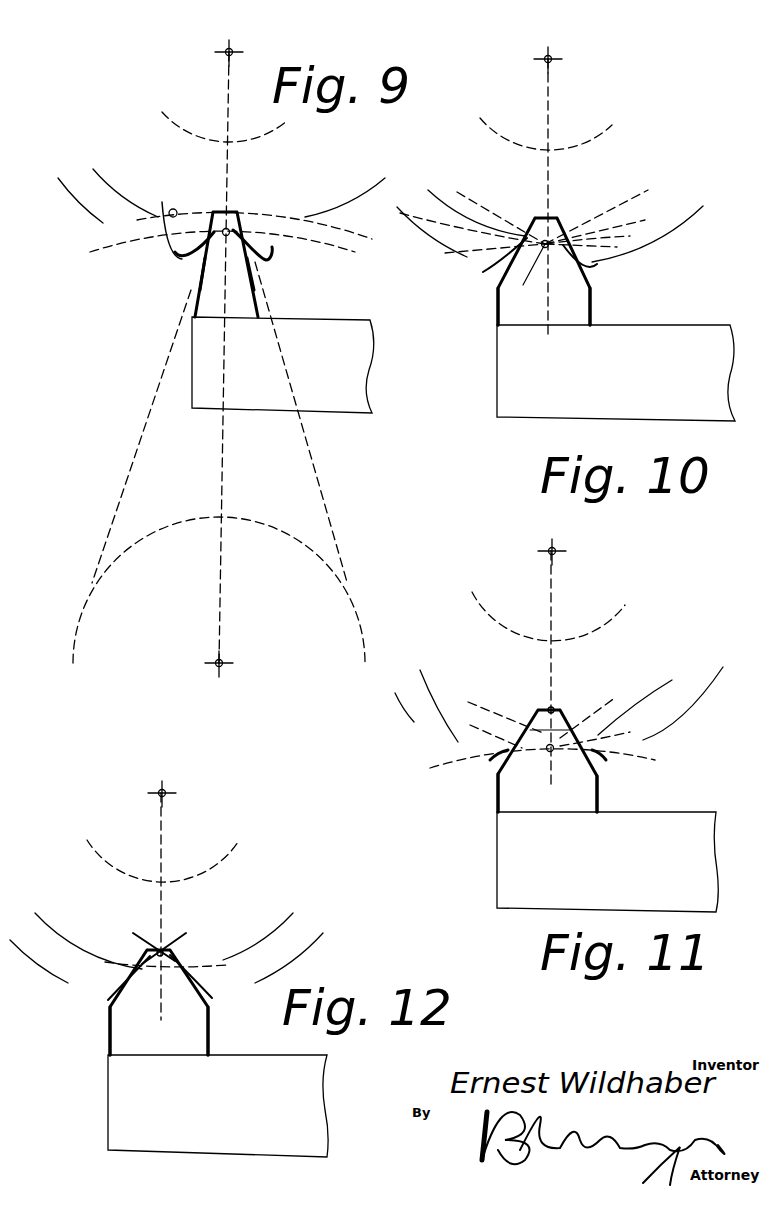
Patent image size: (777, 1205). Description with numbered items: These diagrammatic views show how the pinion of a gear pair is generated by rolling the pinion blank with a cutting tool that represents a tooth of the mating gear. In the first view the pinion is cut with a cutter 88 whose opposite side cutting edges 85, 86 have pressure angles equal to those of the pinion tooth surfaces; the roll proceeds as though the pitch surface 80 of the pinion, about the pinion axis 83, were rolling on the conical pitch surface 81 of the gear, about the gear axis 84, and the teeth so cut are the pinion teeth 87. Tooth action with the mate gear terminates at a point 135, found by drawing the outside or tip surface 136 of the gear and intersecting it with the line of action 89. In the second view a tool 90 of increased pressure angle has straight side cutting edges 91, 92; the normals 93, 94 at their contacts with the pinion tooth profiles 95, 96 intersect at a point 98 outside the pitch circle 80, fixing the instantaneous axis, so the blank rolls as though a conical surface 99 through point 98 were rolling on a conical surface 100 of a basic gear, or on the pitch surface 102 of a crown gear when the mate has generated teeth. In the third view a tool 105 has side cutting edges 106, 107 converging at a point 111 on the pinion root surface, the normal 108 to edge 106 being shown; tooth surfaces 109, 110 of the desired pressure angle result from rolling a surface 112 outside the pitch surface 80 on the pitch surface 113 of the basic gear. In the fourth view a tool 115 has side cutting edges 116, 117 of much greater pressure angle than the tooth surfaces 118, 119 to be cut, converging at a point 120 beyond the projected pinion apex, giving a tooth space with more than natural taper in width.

In FIG. 9, the pitch surface of the pinion 80 is at (338, 193).
In FIG. 10, the pitch surface of the pinion 80 is at (655, 212).
In FIG. 11, the pitch surface of the pinion 80 is at (633, 708).
In FIG. 9, the conical pitch surface of the gear 81 is at (325, 247).
In FIG. 9, the axis of the pinion 83 is at (232, 52).
In FIG. 10, the axis of the pinion 83 is at (551, 59).
In FIG. 11, the axis of the pinion 83 is at (555, 551).
In FIG. 12, the axis of the pinion 83 is at (165, 793).
In FIG. 9, the axis of the gear 84 is at (222, 666).
In FIG. 9, the side cutting edge 85 is at (196, 276).
In FIG. 9, the side cutting edge 86 is at (257, 270).
In FIG. 9, the pinion teeth 87 is at (170, 245).
In FIG. 9, the cutter 88 is at (283, 312).
In FIG. 9, the line of action 89 is at (264, 255).
In FIG. 10, the tool 90 is at (616, 319).
In FIG. 10, the side cutting edge 91 is at (497, 289).
In FIG. 10, the side cutting edge 92 is at (597, 292).
In FIG. 10, the normal 93 is at (483, 203).
In FIG. 10, the normal 94 is at (600, 215).
In FIG. 10, the pinion tooth profile 95 is at (483, 272).
In FIG. 10, the pinion tooth profile 96 is at (597, 266).
In FIG. 10, the point of intersection of normals 98 is at (542, 250).
In FIG. 10, the conical surface 99 is at (470, 231).
In FIG. 10, the conical surface of a basic gear 100 is at (630, 248).
In FIG. 10, the pitch surface of a crown gear 102 is at (640, 248).
In FIG. 11, the tool 105 is at (607, 811).
In FIG. 11, the side cutting edge 106 is at (497, 776).
In FIG. 11, the side cutting edge 107 is at (600, 778).
In FIG. 11, the normal 108 is at (475, 690).
In FIG. 11, the tooth surface 109 is at (492, 760).
In FIG. 11, the tooth surface 110 is at (600, 760).
In FIG. 11, the point of convergence 111 is at (553, 710).
In FIG. 12, the point of convergence 111 is at (160, 950).
In FIG. 11, the surface 112 is at (625, 733).
In FIG. 11, the pitch surface of a basic gear 113 is at (445, 766).
In FIG. 12, the tool 115 is at (218, 1053).
In FIG. 12, the side cutting edge 116 is at (112, 1007).
In FIG. 12, the side cutting edge 117 is at (206, 1005).
In FIG. 12, the tooth surface 118 is at (108, 1000).
In FIG. 12, the tooth surface 119 is at (188, 982).
In FIG. 12, the point of convergence 120 is at (168, 954).
In FIG. 9, the point of termination of tooth action 135 is at (173, 209).
In FIG. 9, the tip surface of the gear 136 is at (347, 235).